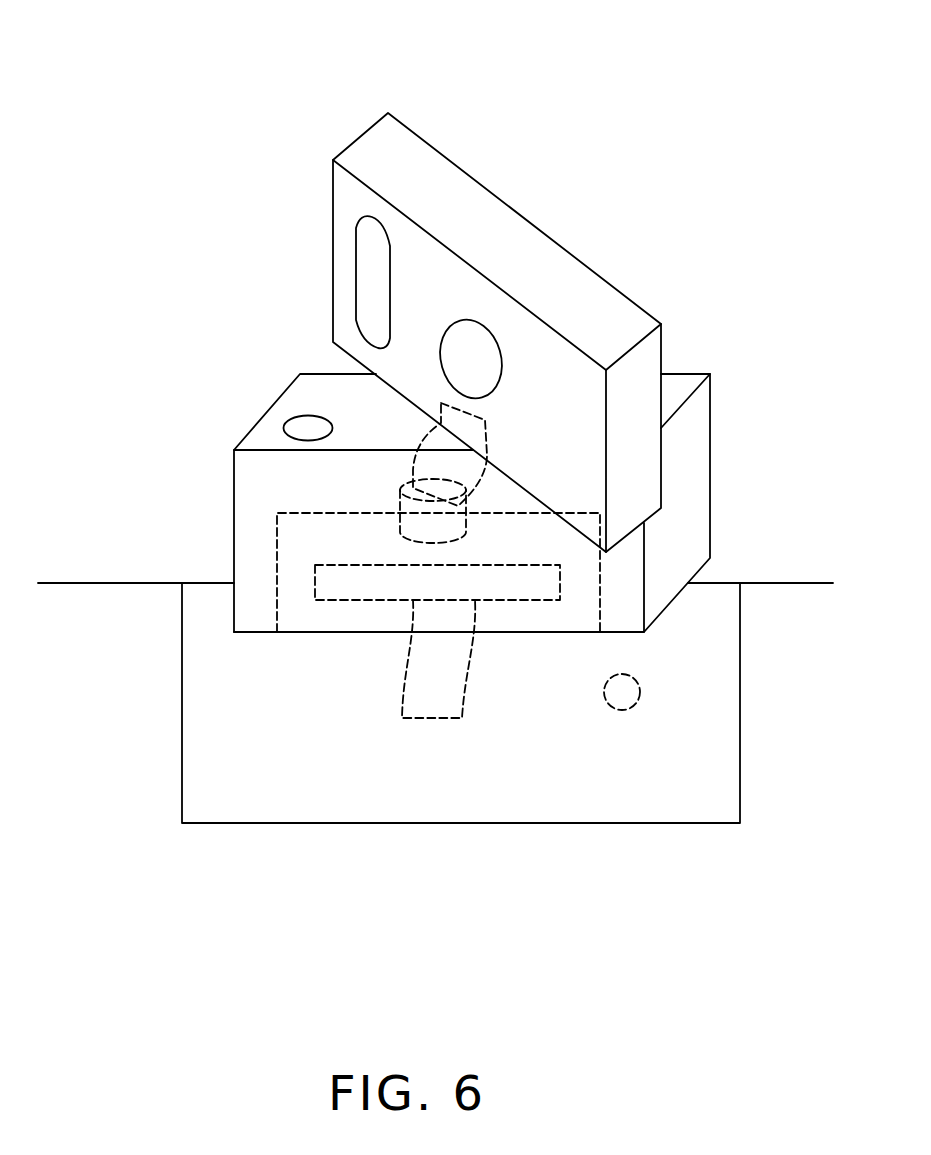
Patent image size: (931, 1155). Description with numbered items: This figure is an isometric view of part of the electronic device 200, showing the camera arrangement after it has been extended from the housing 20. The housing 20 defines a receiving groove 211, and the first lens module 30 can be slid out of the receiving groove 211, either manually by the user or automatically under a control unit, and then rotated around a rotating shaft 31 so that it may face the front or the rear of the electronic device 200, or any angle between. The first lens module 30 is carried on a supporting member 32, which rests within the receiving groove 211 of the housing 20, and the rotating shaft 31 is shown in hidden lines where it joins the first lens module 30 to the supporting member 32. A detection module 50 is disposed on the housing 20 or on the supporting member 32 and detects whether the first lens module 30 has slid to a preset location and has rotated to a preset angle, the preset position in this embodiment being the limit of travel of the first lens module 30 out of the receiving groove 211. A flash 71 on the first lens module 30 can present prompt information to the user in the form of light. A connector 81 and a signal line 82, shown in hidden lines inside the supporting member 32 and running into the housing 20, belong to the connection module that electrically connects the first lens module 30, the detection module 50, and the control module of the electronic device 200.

The electronic device 200 is at (427, 38).
The first lens module 30 is at (471, 359).
The flash 71 is at (372, 260).
The supporting member 32 is at (700, 475).
The detection module 50 is at (308, 428).
The rotating shaft 31 is at (422, 515).
The connector 81 is at (337, 584).
The signal line 82 is at (417, 697).
The housing 20 is at (137, 582).
The receiving groove 211 is at (187, 659).